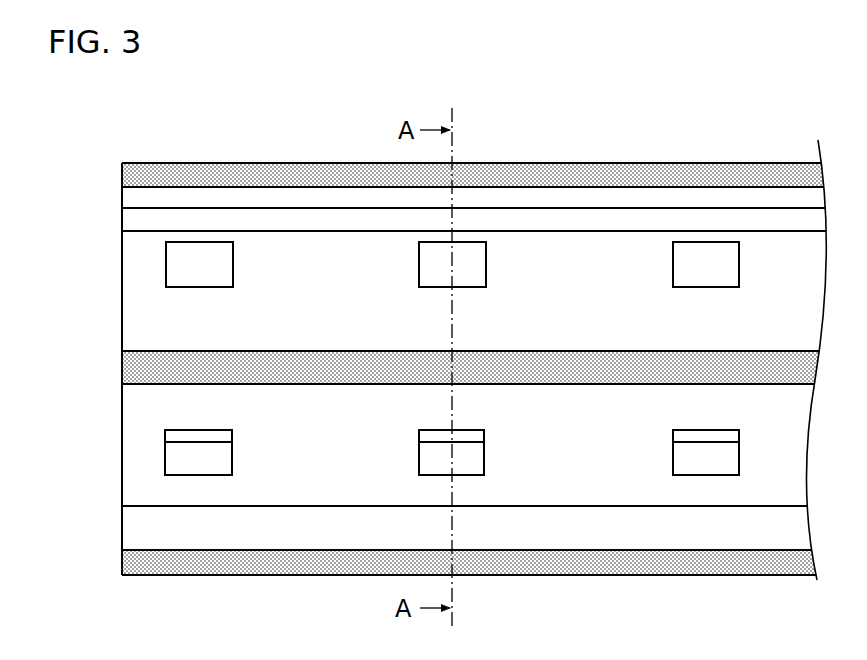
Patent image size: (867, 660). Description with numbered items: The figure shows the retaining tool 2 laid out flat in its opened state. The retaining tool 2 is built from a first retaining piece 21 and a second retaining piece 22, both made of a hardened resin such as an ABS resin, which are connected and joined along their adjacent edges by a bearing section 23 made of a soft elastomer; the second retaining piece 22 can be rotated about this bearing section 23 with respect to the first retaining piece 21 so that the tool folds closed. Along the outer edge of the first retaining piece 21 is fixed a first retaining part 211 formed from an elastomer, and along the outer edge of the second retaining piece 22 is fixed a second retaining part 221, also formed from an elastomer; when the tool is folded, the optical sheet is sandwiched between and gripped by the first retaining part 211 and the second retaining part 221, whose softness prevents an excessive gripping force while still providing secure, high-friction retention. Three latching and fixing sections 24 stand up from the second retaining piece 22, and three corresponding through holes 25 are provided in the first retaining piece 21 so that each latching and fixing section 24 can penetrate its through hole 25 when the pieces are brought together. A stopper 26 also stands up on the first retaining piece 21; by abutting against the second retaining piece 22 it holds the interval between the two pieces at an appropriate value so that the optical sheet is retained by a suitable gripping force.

The retaining tool 2 is at (220, 142).
The first retaining piece 21 is at (125, 307).
The second retaining piece 22 is at (125, 462).
The first retaining part 211 is at (552, 170).
The second retaining part 221 is at (568, 562).
The bearing section 23 is at (353, 378).
The latching and fixing section 24 is at (217, 460).
The through hole 25 is at (233, 265).
The stopper 26 is at (363, 232).